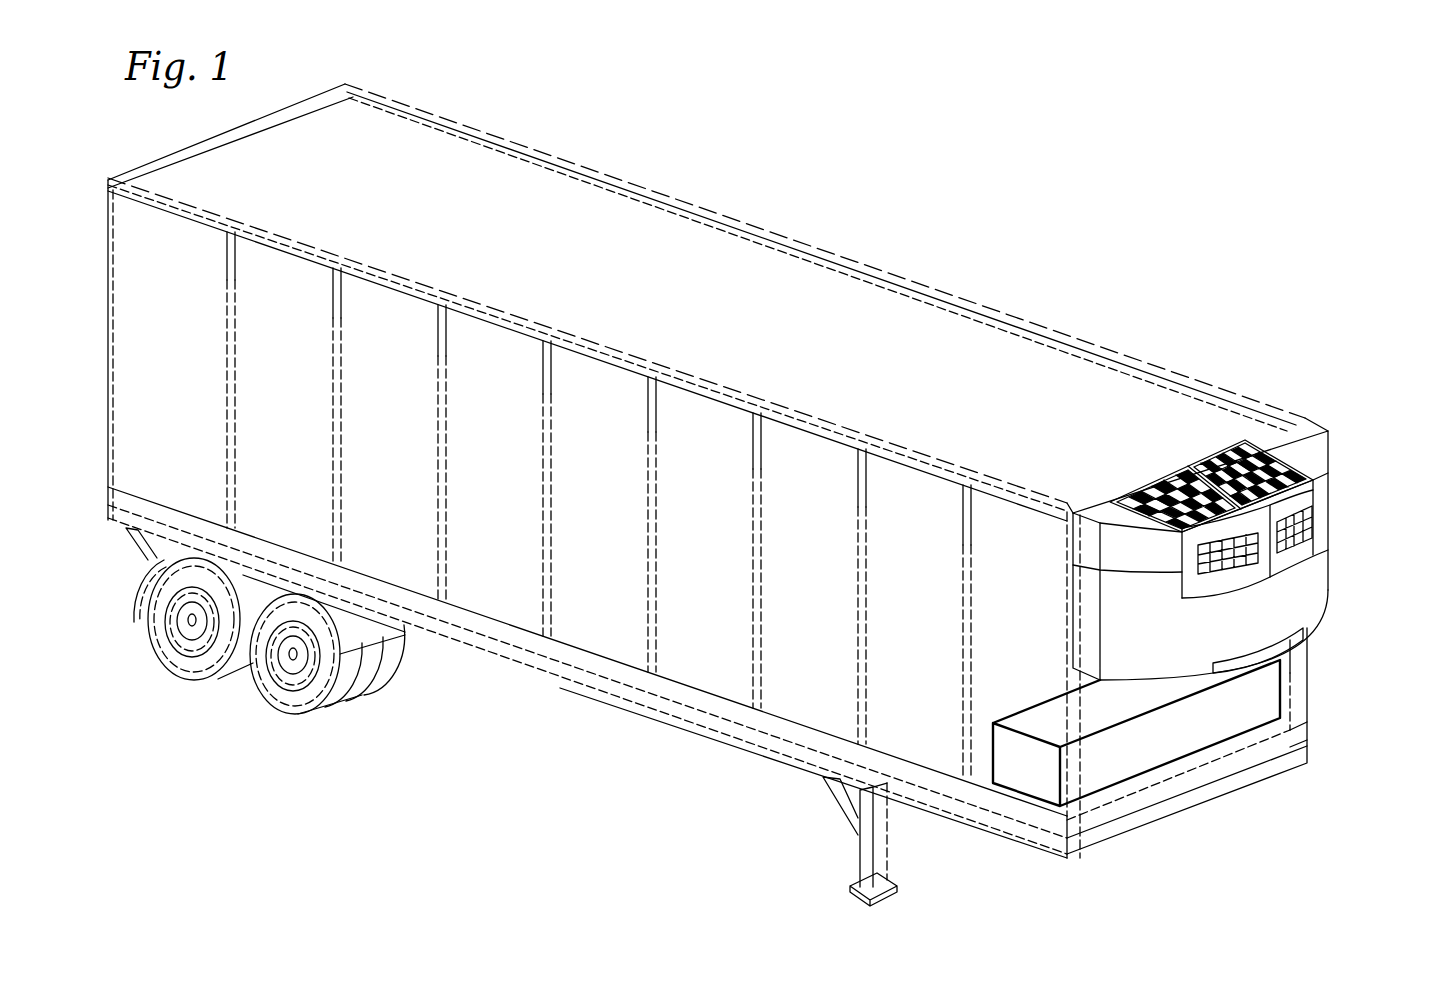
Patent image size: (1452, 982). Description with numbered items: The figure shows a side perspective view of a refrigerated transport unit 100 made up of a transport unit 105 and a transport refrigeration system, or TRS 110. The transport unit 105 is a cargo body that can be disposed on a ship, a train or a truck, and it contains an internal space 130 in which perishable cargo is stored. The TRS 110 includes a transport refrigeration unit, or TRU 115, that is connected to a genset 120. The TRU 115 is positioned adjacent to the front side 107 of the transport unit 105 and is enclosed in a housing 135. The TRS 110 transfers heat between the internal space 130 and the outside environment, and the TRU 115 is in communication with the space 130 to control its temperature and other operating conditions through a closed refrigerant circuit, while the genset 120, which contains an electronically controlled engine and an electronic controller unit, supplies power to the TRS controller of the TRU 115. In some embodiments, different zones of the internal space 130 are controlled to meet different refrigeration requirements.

The refrigerated transport unit 100 is at (1077, 195).
The transport unit 105 is at (1092, 352).
The front side 107 is at (1297, 675).
The TRS 110 is at (1328, 398).
The TRU 115 is at (1325, 578).
The genset 120 is at (1262, 708).
The internal space 130 is at (935, 413).
The housing 135 is at (1322, 522).